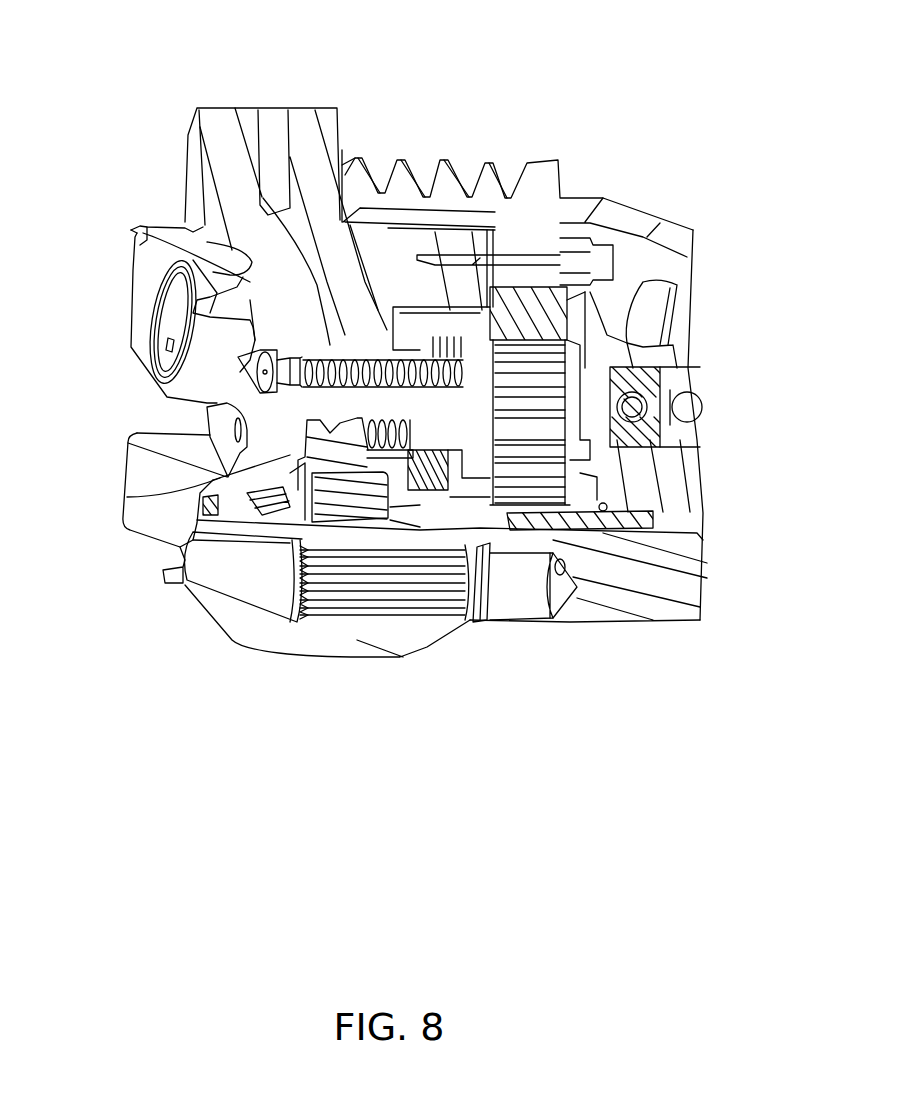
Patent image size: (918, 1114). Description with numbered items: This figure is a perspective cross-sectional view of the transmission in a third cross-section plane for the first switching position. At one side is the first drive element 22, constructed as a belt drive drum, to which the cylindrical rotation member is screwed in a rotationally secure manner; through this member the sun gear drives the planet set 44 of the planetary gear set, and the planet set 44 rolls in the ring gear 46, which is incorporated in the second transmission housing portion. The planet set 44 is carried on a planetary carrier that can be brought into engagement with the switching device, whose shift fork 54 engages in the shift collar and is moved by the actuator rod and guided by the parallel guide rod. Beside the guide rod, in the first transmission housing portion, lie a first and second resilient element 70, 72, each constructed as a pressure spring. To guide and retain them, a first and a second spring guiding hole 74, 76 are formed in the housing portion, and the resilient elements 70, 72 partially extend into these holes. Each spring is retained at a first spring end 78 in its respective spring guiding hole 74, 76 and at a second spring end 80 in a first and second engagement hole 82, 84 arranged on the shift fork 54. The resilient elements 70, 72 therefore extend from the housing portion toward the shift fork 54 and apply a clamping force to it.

The first drive element 22 is at (557, 187).
The planet set 44 is at (543, 447).
The ring gear 46 is at (550, 313).
The shift fork 54 is at (432, 337).
The first resilient element 70 is at (137, 233).
The second resilient element 72 is at (380, 418).
The first spring guiding hole 74 is at (263, 198).
The second spring guiding hole 76 is at (207, 433).
The first spring end 78 is at (127, 497).
The second spring end 80 is at (493, 265).
The first engagement hole 82 is at (467, 627).
The second engagement hole 84 is at (490, 413).